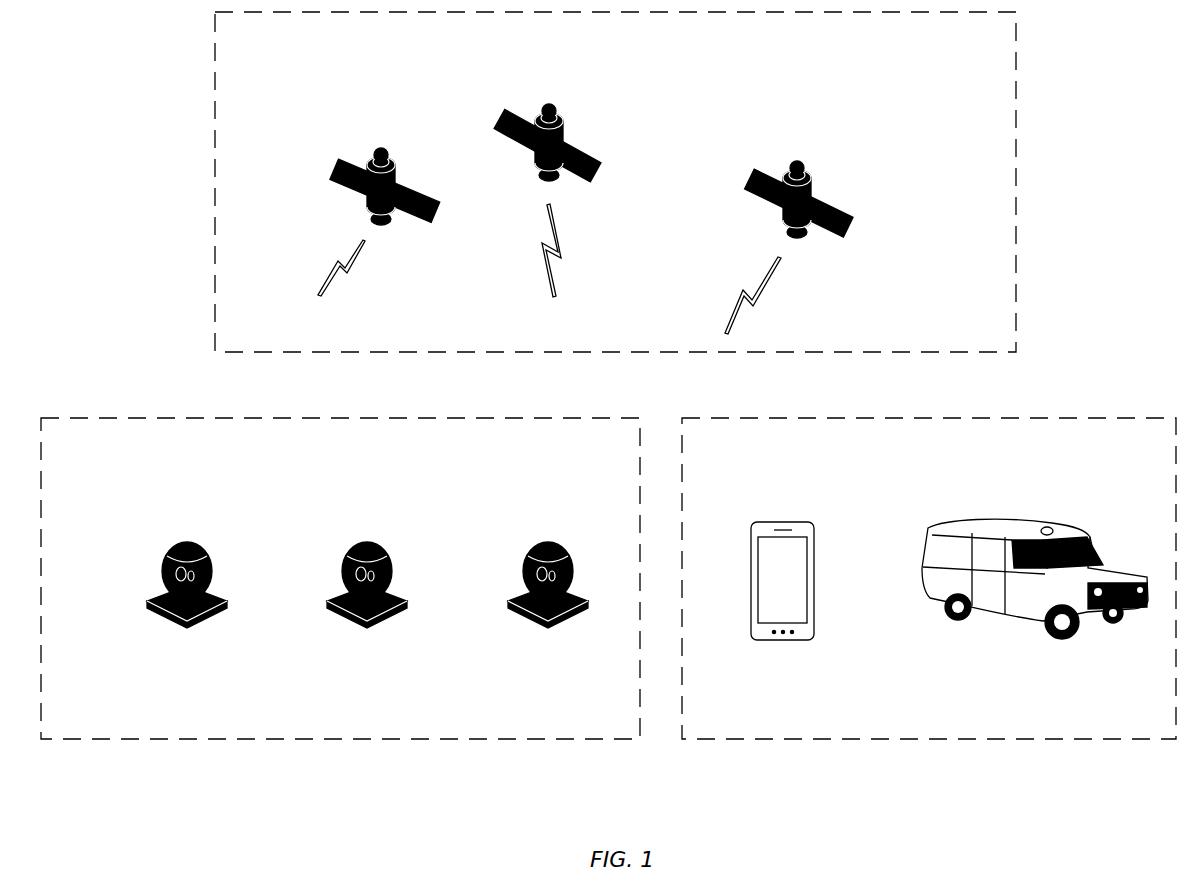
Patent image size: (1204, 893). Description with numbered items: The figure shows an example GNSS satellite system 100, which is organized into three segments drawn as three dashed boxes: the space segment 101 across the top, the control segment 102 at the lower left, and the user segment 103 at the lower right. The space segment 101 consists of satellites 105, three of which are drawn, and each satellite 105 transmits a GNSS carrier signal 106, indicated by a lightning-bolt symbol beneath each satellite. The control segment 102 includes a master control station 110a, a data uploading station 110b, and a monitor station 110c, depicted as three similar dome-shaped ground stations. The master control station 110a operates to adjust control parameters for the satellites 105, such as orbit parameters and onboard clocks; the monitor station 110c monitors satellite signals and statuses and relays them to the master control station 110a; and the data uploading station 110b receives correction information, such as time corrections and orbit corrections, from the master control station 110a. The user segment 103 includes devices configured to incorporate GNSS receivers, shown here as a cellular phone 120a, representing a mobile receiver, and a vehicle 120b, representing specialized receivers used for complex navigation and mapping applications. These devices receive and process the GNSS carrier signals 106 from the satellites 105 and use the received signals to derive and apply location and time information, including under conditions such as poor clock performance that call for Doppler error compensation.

The system 100 is at (97, 62).
The space segment 101 is at (303, 63).
The control segment 102 is at (100, 736).
The user segment 103 is at (755, 726).
The satellites 105 is at (400, 140).
The GNSS carrier signal 106 is at (366, 264).
The master control station 110a is at (164, 540).
The data uploading station 110b is at (364, 540).
The monitor station 110c is at (540, 540).
The cellular phone 120a is at (781, 510).
The vehicle 120b is at (955, 510).